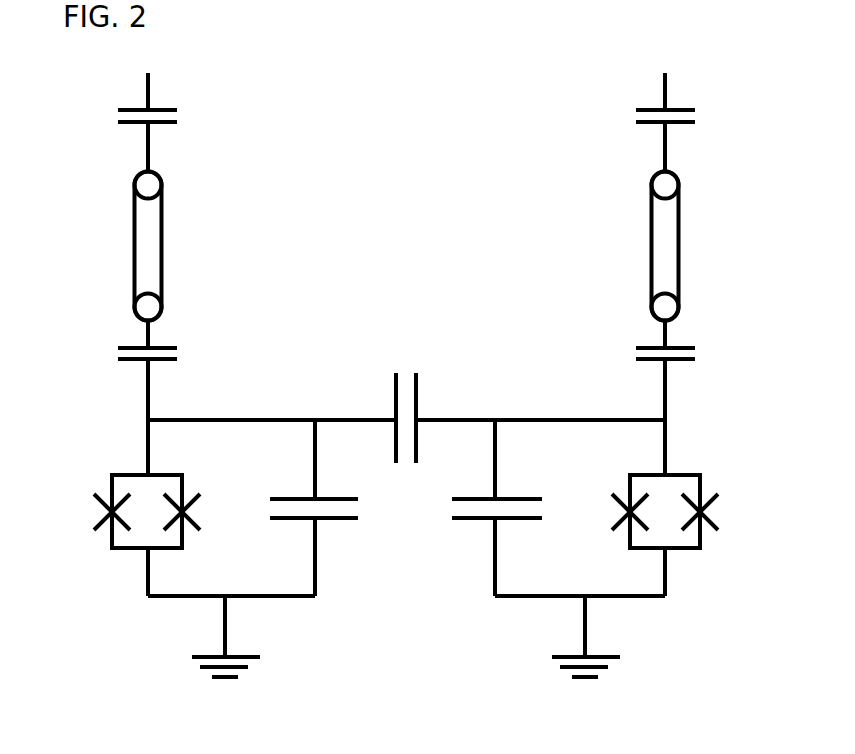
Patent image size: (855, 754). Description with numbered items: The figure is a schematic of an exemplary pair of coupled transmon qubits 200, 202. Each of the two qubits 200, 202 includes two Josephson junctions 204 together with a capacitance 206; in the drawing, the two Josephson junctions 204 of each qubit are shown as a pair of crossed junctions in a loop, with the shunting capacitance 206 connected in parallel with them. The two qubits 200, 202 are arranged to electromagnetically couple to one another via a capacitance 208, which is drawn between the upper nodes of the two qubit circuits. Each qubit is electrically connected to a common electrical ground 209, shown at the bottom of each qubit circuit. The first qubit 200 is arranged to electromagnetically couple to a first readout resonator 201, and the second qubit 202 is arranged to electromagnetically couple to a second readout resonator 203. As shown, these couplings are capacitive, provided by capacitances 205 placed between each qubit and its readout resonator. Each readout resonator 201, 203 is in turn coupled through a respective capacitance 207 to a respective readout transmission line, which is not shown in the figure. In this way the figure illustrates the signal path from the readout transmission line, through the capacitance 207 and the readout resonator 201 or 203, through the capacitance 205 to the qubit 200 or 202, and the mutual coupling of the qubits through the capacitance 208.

The transmon qubit 200 is at (100, 608).
The first readout resonator 201 is at (156, 246).
The transmon qubit 202 is at (720, 608).
The second readout resonator 203 is at (650, 250).
The Josephson junction 204 is at (95, 502).
The capacitance 205 is at (178, 347).
The capacitance 206 is at (337, 497).
The capacitance 207 is at (178, 122).
The capacitance 208 is at (418, 402).
The common electrical ground 209 is at (258, 655).